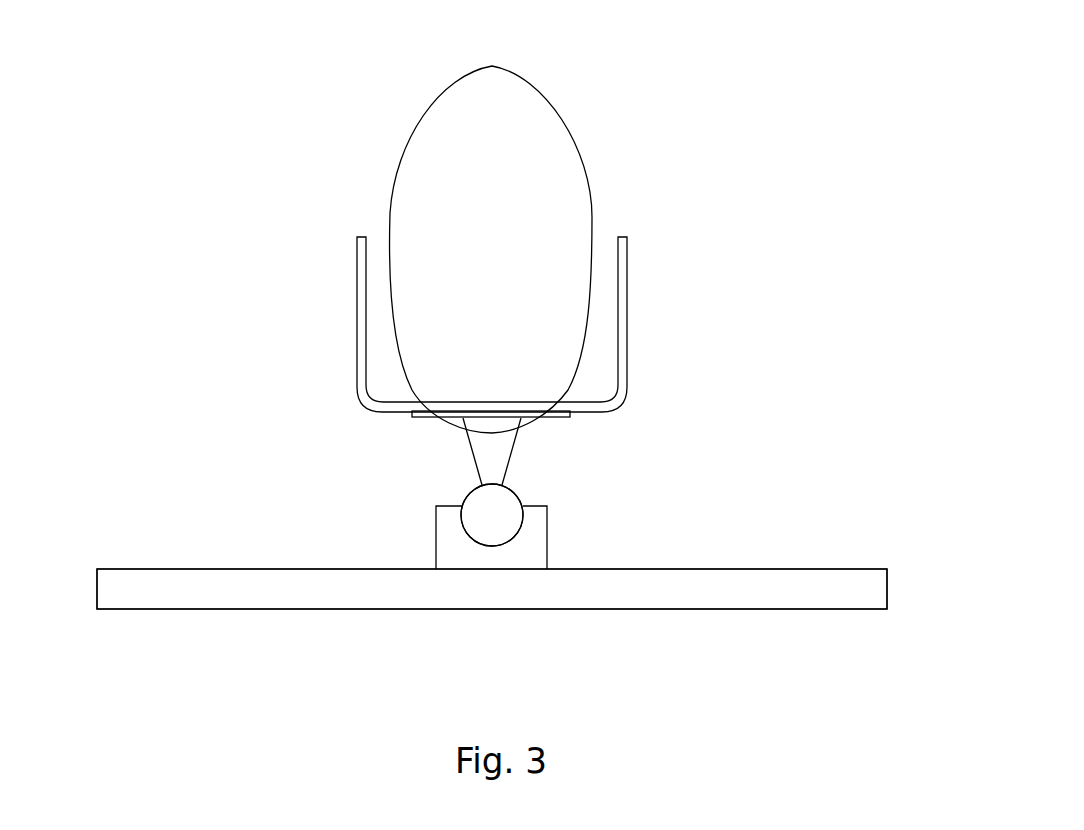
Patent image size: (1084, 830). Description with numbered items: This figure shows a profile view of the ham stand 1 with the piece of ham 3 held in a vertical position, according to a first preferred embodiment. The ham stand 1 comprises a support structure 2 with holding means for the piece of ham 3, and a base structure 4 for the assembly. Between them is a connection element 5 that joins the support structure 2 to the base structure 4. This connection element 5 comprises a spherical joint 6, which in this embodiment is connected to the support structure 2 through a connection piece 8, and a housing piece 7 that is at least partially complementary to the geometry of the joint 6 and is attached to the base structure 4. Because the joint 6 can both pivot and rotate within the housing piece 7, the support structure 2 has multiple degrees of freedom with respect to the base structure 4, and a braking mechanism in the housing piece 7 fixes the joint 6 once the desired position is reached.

The ham stand 1 is at (290, 635).
The support structure 2 is at (625, 312).
The piece of ham 3 is at (470, 220).
The base structure 4 is at (773, 579).
The connection element 5 is at (602, 492).
The spherical joint 6 is at (492, 525).
The housing piece 7 is at (535, 551).
The connection piece 8 is at (492, 455).